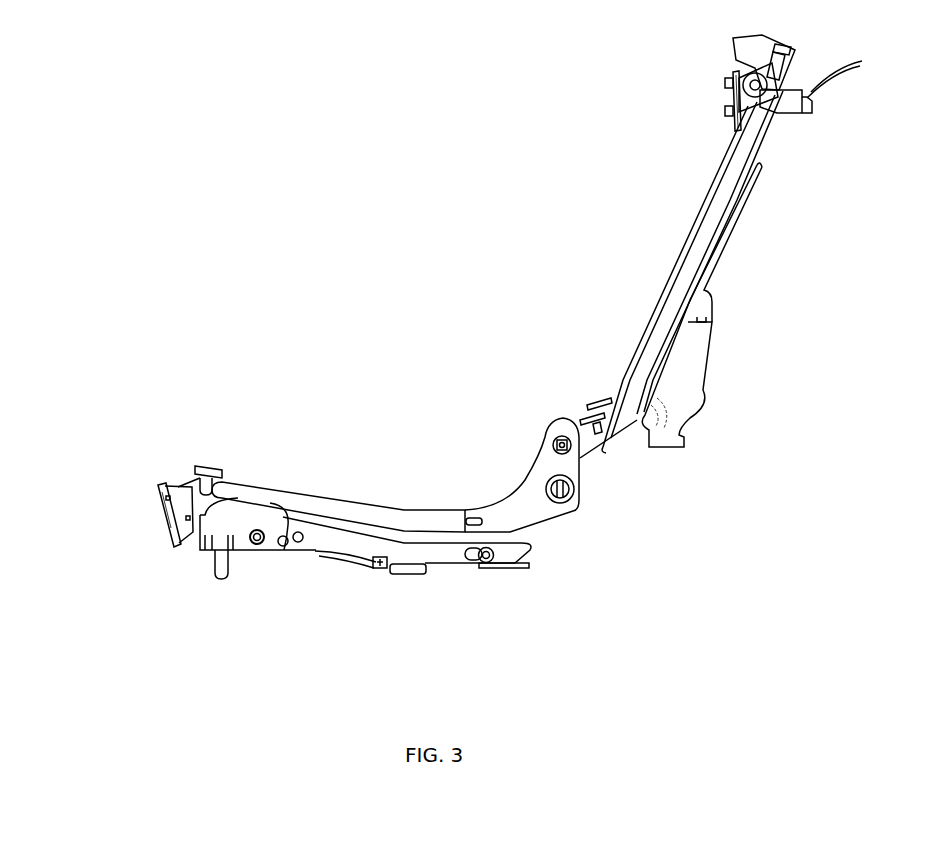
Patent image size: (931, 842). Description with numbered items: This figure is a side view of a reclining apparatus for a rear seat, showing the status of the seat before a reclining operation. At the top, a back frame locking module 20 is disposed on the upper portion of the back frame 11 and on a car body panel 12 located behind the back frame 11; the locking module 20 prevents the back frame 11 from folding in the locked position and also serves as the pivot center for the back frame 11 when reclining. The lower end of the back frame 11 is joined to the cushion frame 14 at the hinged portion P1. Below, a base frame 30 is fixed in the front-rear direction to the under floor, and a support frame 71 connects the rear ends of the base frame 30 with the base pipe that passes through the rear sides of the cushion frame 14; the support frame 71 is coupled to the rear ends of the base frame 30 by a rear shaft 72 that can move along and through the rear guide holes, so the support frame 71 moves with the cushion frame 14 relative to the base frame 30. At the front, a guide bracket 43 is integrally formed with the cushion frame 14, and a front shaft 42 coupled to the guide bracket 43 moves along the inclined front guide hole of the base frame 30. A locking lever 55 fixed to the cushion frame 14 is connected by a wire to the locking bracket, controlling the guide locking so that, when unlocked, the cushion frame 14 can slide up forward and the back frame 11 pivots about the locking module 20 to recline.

The back frame locking module 20 is at (727, 93).
The back frame 11 is at (696, 246).
The car body panel 12 is at (714, 290).
The hinged portion P1 is at (562, 438).
The cushion frame 14 is at (302, 500).
The support frame 71 is at (522, 543).
The rear shaft 72 is at (486, 564).
The base frame 30 is at (366, 549).
The front shaft 42 is at (260, 545).
The guide bracket 43 is at (236, 519).
The locking lever 55 is at (172, 513).